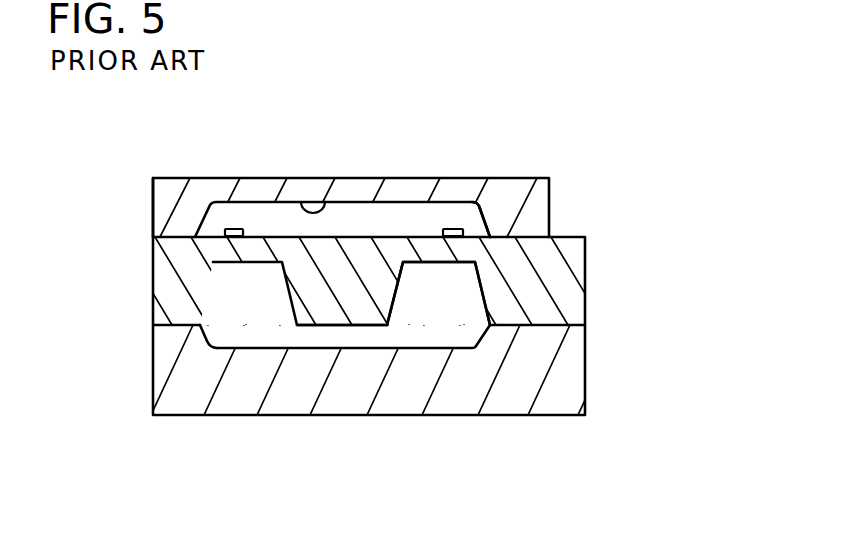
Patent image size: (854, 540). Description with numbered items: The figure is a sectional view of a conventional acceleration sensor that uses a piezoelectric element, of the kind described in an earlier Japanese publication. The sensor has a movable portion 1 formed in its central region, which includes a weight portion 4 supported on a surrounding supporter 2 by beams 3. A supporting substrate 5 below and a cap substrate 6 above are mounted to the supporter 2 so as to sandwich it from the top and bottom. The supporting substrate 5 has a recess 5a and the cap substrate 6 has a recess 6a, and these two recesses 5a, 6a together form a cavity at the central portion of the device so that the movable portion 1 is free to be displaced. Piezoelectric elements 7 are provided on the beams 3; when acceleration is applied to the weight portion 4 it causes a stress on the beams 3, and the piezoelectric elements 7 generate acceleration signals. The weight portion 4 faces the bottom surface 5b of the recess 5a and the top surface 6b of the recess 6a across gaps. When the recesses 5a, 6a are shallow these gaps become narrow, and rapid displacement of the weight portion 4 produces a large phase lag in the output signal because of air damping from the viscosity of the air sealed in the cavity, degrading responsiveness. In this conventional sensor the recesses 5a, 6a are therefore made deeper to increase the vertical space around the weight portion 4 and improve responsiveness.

The movable portion 1 is at (284, 315).
The supporter 2 is at (573, 264).
The beams 3 is at (430, 263).
The weight portion 4 is at (358, 315).
The supporting substrate 5 is at (578, 368).
The recess 5a is at (202, 323).
The bottom surface 5b is at (398, 348).
The cap substrate 6 is at (513, 192).
The recess 6a is at (482, 218).
The top surface 6b is at (299, 201).
The piezoelectric elements 7 is at (227, 228).